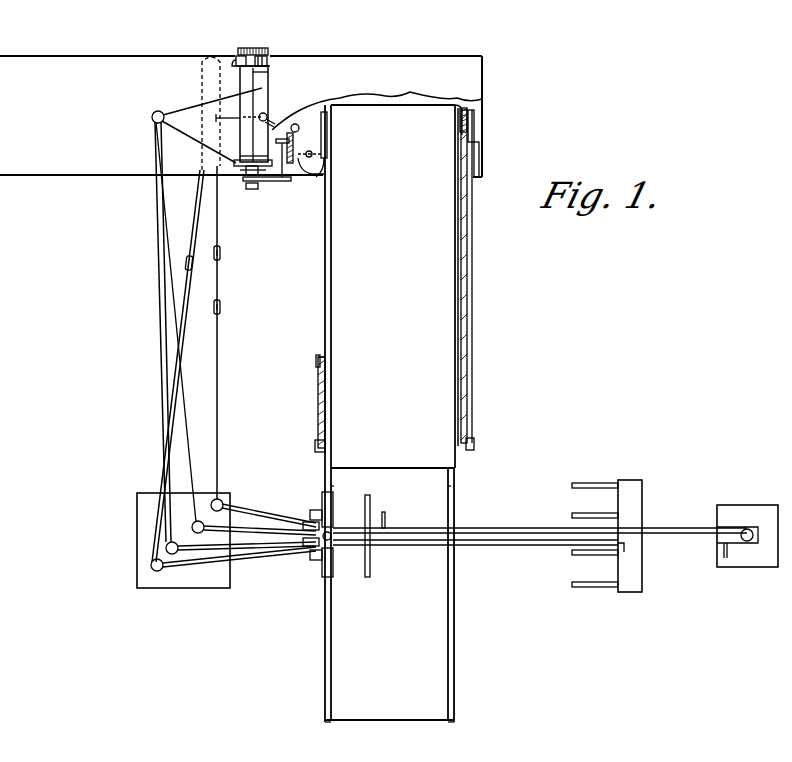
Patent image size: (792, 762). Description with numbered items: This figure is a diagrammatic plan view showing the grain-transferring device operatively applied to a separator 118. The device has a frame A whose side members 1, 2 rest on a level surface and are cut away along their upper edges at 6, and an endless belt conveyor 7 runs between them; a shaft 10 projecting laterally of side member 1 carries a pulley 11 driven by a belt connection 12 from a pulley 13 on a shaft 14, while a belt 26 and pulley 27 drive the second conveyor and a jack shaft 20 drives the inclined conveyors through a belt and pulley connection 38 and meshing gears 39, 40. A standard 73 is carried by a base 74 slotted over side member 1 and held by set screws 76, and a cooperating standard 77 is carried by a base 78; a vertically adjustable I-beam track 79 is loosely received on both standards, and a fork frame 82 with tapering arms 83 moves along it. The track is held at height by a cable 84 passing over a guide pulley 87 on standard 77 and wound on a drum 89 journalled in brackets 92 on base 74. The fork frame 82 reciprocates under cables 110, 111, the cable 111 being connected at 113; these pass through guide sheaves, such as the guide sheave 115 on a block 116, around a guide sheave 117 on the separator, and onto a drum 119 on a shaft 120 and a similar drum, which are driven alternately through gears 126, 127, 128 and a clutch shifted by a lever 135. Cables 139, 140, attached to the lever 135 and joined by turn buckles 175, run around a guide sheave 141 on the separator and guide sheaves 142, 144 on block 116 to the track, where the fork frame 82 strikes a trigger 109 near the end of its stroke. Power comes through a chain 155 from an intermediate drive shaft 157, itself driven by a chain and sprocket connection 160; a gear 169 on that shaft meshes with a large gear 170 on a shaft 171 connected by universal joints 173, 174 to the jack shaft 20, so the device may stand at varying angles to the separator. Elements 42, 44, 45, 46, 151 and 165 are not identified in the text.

The side member 1 is at (326, 622).
The side member 2 is at (452, 590).
The cut away upper edges 6 is at (325, 492).
The endless belt conveyor 7 is at (435, 632).
The shaft 10 is at (316, 444).
The pulley 11 is at (318, 450).
The belt connection 12 is at (318, 398).
The pulley 13 is at (318, 368).
The shaft 14 is at (318, 360).
The jack shaft 20 is at (311, 162).
The belt 26 is at (475, 130).
The pulley 27 is at (479, 152).
The belt and pulley connection 38 is at (329, 140).
The gear 39 is at (458, 128).
The gear 40 is at (470, 96).
The bottom block 42 is at (474, 446).
The side bar 44 is at (458, 257).
The main column 45 is at (325, 313).
The hatched bar 46 is at (472, 406).
The standard 73 is at (332, 530).
The base 74 is at (333, 500).
The set screws 76 is at (318, 572).
The cooperating standard 77 is at (752, 531).
The base 78 is at (742, 506).
The track 79 is at (540, 528).
The frame of fork 82 is at (642, 487).
The tapering arms 83 is at (589, 483).
The cable 84 is at (318, 525).
The guide pulley 87 is at (743, 530).
The drum 89 is at (310, 552).
The brackets 92 is at (316, 510).
The trigger 109 is at (730, 556).
The cable 110 is at (686, 527).
The cable 111 is at (130, 257).
The connection point 113 is at (630, 548).
The guide sheave 115 is at (176, 544).
The block 116 is at (200, 580).
The guide sheave 117 is at (152, 120).
The separator 118 is at (105, 62).
The drum 119 is at (268, 95).
The shaft 120 is at (268, 62).
The gear 126 is at (268, 68).
The gear 127 is at (238, 60).
The gear 128 is at (236, 164).
The lever 135 is at (234, 108).
The cable 139 is at (210, 85).
The cable 140 is at (220, 225).
The guide sheave 141 is at (208, 62).
The guide sheave 142 is at (152, 570).
The guide sheave 144 is at (225, 500).
The post 151 is at (387, 517).
The chain 155 is at (268, 49).
The intermediate drive shaft 157 is at (296, 208).
The chain and sprocket connection 160 is at (248, 187).
The plate 165 is at (376, 500).
The gear 169 is at (282, 165).
The gear 170 is at (290, 142).
The shaft 171 is at (272, 181).
The universal joint 173 is at (288, 181).
The universal joint 174 is at (298, 131).
The turn buckles 175 is at (222, 251).
The frame A is at (455, 488).